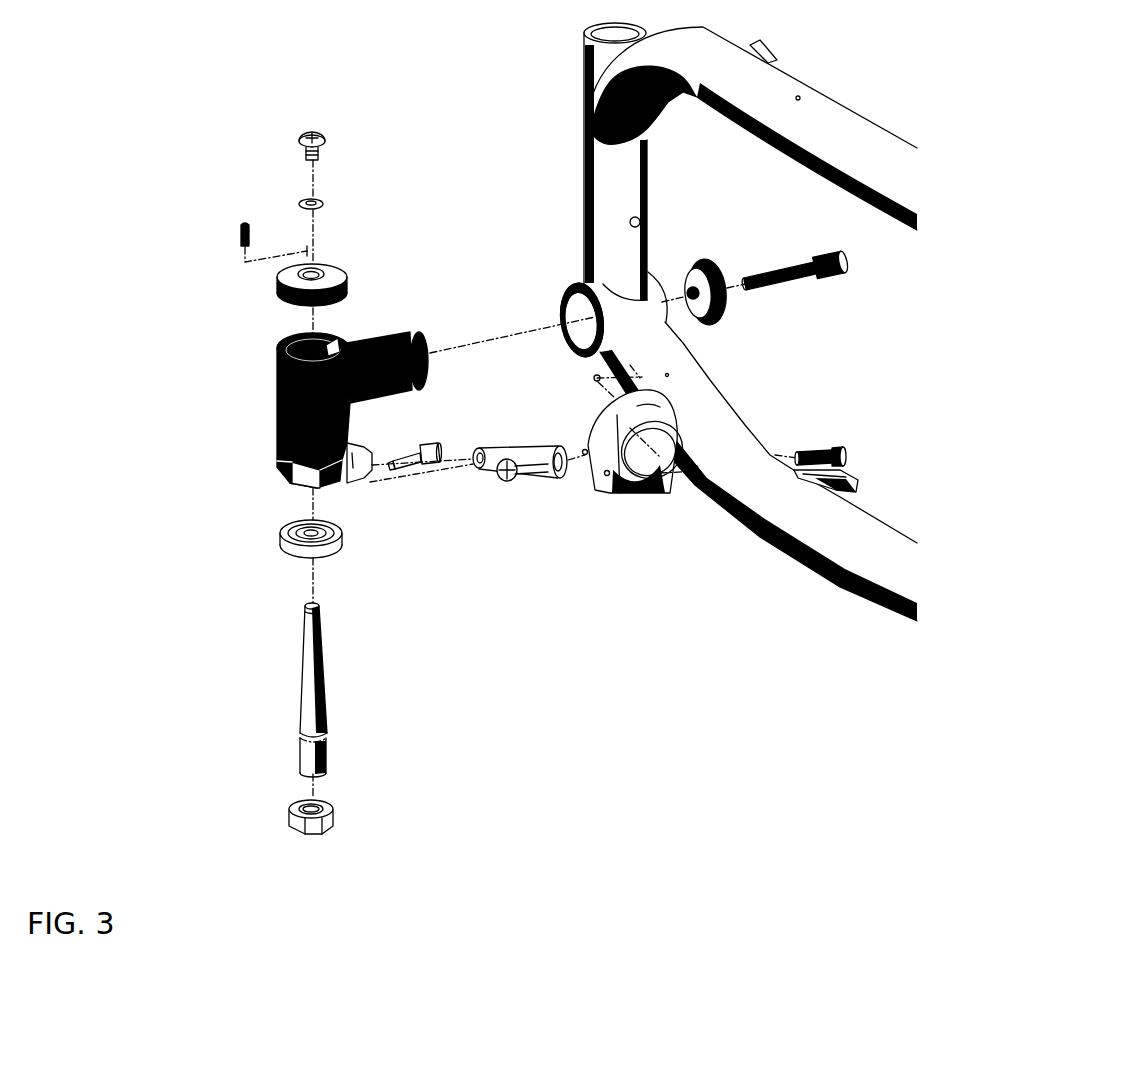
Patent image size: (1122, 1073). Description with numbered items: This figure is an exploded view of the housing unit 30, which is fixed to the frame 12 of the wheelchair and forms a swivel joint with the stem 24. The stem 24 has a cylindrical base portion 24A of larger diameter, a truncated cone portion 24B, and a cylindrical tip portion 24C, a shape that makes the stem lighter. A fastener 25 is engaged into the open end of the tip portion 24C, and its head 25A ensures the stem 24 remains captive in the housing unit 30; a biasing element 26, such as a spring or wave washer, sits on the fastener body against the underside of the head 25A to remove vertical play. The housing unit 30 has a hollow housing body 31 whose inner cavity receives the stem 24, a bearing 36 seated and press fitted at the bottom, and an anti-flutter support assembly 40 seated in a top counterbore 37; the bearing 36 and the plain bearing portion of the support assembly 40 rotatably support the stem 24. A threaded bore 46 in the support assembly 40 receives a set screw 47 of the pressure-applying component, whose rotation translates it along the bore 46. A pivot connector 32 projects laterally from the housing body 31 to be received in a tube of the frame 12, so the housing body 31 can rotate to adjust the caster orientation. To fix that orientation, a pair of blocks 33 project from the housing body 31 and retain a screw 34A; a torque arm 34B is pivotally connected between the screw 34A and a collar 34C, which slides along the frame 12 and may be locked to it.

The frame 12 is at (643, 188).
The stem 24 is at (339, 715).
The base portion 24A is at (302, 742).
The truncated cone portion 24B is at (320, 677).
The tip portion 24C is at (318, 618).
The fastener 25 is at (310, 123).
The head 25A is at (327, 138).
The biasing element 26 is at (300, 198).
The housing unit 30 is at (308, 415).
The housing body 31 is at (277, 400).
The pivot connector 32 is at (415, 337).
The blocks 33 is at (367, 482).
The screw 34A is at (413, 445).
The torque arm 34B is at (543, 478).
The collar 34C is at (618, 497).
The bearing 36 is at (280, 553).
The top counterbore 37 is at (329, 340).
The anti-flutter support assembly 40 is at (281, 208).
The bore 46 is at (303, 277).
The set screw 47 is at (232, 227).